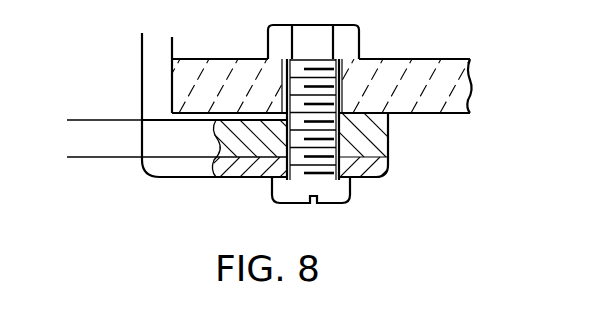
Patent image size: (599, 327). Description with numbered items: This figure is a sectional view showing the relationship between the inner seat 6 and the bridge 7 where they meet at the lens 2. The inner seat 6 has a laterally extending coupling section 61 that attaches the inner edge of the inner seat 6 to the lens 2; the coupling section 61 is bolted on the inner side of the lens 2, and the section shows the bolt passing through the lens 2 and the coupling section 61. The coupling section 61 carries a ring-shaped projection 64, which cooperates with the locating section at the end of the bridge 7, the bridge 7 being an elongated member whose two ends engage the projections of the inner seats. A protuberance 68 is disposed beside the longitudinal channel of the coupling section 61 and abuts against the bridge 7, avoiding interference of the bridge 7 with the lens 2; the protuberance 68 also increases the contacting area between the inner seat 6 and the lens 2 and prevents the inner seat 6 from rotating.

The lens 2 is at (403, 72).
The inner seat 6 is at (187, 168).
The bridge 7 is at (98, 143).
The coupling section 61 is at (357, 178).
The ring-shaped projection 64 is at (380, 137).
The protuberance 68 is at (152, 124).